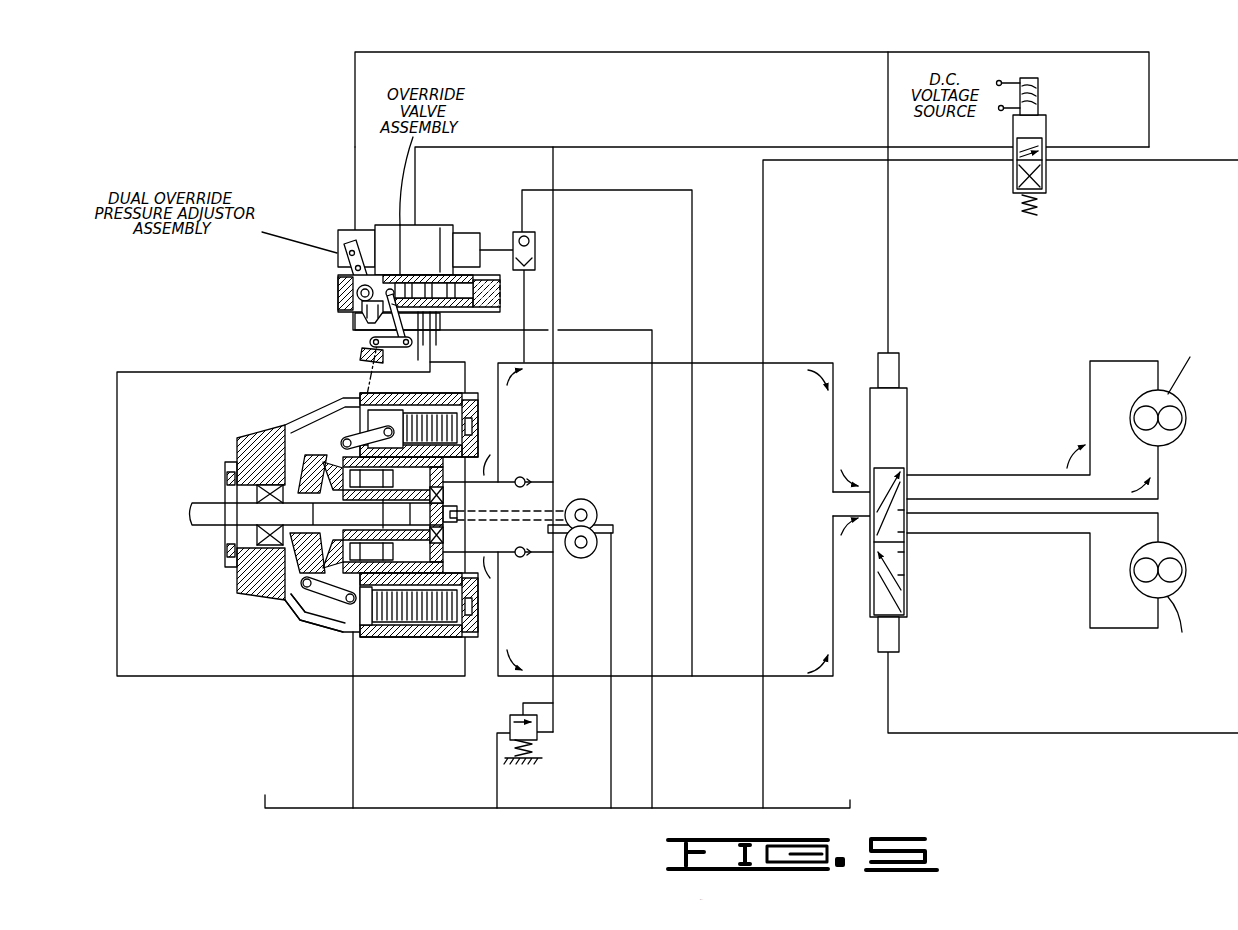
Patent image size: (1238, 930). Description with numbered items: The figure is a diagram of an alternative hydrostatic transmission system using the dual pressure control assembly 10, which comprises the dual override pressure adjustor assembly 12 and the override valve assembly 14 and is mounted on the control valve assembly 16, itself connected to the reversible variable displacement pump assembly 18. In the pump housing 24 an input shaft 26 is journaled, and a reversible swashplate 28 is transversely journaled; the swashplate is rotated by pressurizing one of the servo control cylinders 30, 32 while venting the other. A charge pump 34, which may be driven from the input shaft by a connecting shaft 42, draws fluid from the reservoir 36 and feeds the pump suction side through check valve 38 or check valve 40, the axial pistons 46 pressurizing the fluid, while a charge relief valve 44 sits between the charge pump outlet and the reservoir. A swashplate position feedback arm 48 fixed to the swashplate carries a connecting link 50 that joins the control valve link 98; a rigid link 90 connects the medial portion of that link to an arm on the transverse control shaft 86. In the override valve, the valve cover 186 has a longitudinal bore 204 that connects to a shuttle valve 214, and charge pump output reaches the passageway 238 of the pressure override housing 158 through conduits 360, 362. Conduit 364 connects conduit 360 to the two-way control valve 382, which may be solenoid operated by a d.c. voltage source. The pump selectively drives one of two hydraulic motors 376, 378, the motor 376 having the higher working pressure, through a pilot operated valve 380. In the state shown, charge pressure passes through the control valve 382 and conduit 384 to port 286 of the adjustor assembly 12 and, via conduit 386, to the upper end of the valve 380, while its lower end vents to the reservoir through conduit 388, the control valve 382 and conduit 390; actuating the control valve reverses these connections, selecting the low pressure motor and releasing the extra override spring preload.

The dual pressure control assembly 10 is at (340, 226).
The dual override pressure adjustor assembly 12 is at (337, 248).
The override valve assembly 14 is at (392, 225).
The control valve assembly 16 is at (337, 280).
The reversible variable displacement pump assembly 18 is at (298, 410).
The pump housing 24 is at (295, 613).
The input shaft 26 is at (204, 521).
The reversible swashplate 28 is at (312, 460).
The servo control cylinder 30 is at (455, 398).
The servo control cylinder 32 is at (447, 622).
The charge pump 34 is at (598, 512).
The reservoir 36 is at (850, 802).
The check valve 38 is at (521, 476).
The check valve 40 is at (522, 558).
The connecting shaft 42 is at (528, 510).
The charge relief valve 44 is at (512, 716).
The axial pistons 46 is at (366, 476).
The swashplate position feedback arm 48 is at (358, 350).
The connecting link 50 is at (392, 345).
The transverse control shaft 86 is at (357, 292).
The rigid link 90 is at (360, 318).
The control valve link 98 is at (380, 337).
The pressure override housing 158 is at (445, 226).
The valve cover 186 is at (470, 230).
The longitudinal bore 204 is at (483, 250).
The shuttle valve 214 is at (530, 237).
The passageway 238 is at (425, 225).
The port 286 is at (355, 228).
The conduit 360 is at (553, 405).
The conduit 362 is at (470, 147).
The conduit 364 is at (712, 147).
The hydraulic motor 376 is at (1186, 403).
The hydraulic motor 378 is at (1187, 548).
The hydraulic pressure pilot operated valve 380 is at (907, 410).
The two-way control valve 382 is at (1046, 190).
The conduit 384 is at (727, 53).
The conduit 386 is at (888, 214).
The conduit 388 is at (1052, 733).
The conduit 390 is at (763, 262).